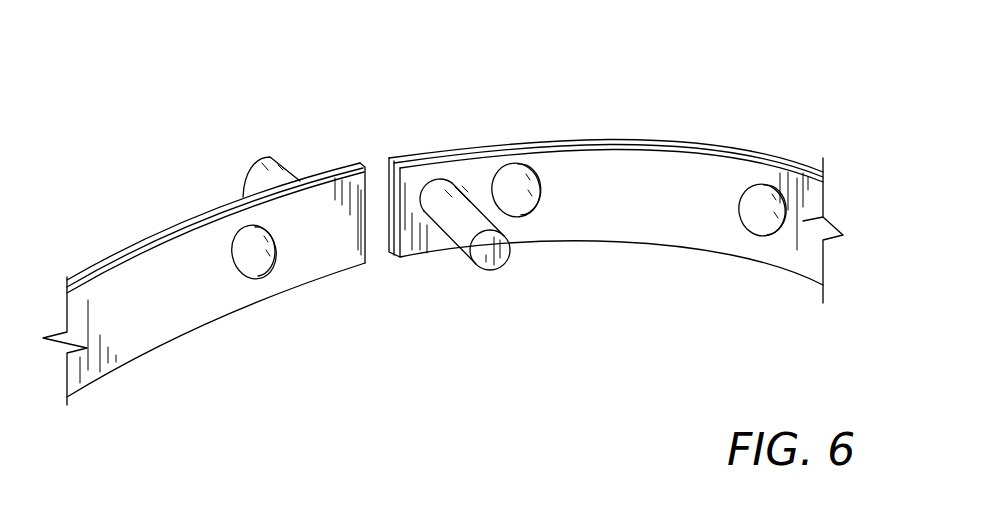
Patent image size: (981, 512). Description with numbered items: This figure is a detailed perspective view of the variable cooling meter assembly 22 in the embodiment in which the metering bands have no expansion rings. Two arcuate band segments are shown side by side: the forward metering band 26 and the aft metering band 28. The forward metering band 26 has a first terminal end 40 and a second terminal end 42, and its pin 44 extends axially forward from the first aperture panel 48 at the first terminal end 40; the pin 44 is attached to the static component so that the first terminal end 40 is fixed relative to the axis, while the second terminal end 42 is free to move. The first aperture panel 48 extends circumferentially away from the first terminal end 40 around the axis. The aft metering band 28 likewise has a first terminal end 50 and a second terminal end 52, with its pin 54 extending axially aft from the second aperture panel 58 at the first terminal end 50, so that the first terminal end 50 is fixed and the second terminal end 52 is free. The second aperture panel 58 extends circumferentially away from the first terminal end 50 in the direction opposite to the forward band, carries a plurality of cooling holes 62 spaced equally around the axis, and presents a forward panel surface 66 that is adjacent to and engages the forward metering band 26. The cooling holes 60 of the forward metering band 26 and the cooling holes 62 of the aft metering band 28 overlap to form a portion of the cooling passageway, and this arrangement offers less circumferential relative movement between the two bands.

The variable cooling meter assembly 22 is at (789, 58).
The forward metering band 26 is at (780, 290).
The aft metering band 28 is at (685, 128).
The first terminal end 40 is at (423, 227).
The second terminal end 42 is at (370, 243).
The pin 44 is at (488, 269).
The first aperture panel 48 is at (627, 200).
The first terminal end 50 is at (361, 166).
The second terminal end 52 is at (388, 173).
The pin 54 is at (263, 170).
The second aperture panel 58 is at (118, 248).
The cooling holes 60 is at (752, 234).
The cooling holes 62 is at (243, 277).
The forward panel surface 66 is at (528, 170).